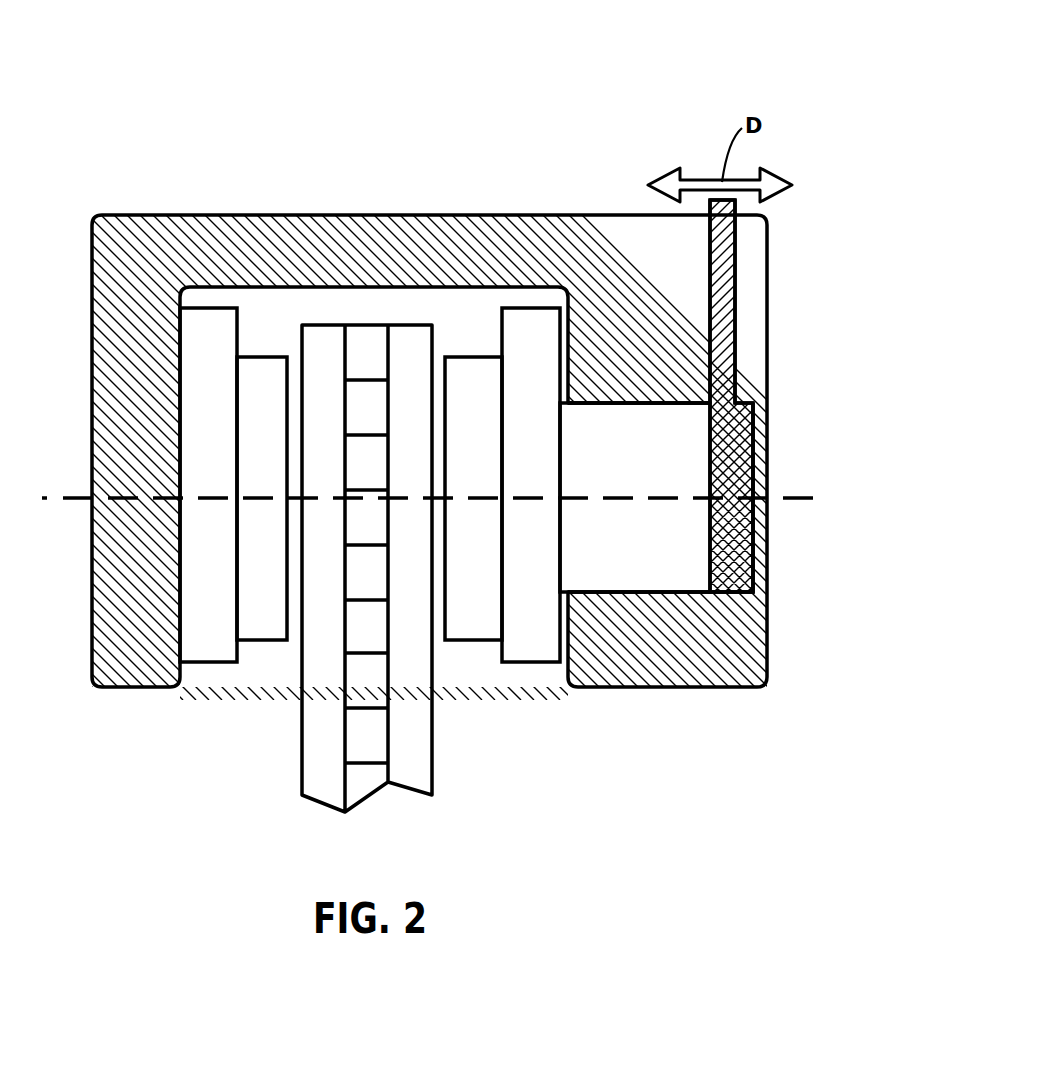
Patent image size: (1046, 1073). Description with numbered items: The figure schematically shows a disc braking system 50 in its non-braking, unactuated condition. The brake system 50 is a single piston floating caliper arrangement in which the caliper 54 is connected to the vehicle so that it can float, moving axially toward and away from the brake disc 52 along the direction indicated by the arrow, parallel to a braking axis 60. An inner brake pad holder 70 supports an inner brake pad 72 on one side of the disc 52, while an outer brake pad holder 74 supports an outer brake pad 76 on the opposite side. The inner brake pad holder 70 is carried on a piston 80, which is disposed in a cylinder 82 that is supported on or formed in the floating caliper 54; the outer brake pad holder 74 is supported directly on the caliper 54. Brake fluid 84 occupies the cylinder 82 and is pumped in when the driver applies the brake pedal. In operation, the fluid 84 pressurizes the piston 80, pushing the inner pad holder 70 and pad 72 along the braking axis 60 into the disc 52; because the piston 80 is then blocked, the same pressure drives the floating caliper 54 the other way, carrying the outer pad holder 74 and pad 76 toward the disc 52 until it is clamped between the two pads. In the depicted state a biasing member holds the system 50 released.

The disc braking system 50 is at (674, 87).
The brake disc 52 is at (302, 712).
The caliper 54 is at (679, 289).
The braking axis 60 is at (795, 498).
The inner brake pad holder 70 is at (534, 355).
The inner brake pad 72 is at (482, 380).
The outer brake pad holder 74 is at (207, 320).
The outer brake pad 76 is at (265, 372).
The piston 80 is at (603, 445).
The cylinder 82 is at (640, 385).
The brake fluid 84 is at (728, 508).